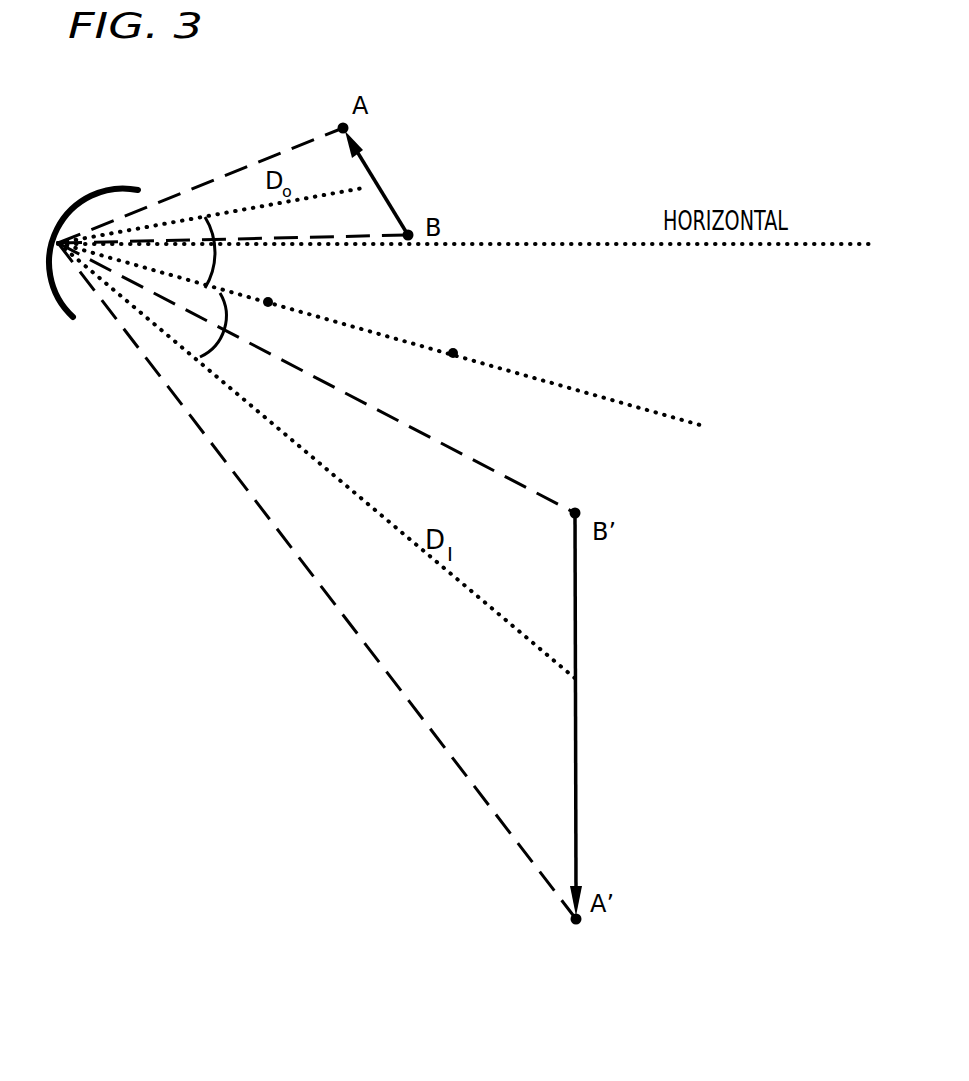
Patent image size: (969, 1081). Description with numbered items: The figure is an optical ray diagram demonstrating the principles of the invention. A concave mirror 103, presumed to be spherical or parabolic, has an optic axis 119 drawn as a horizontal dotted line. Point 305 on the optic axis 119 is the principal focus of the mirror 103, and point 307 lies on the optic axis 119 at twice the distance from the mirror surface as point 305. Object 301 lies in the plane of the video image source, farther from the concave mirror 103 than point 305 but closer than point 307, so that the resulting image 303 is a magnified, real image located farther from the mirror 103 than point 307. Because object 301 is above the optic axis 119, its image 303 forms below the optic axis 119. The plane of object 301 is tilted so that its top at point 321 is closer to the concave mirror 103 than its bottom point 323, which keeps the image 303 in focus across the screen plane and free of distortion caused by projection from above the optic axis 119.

The concave mirror 103 is at (75, 207).
The optic axis 119 is at (622, 405).
The object 301 is at (372, 170).
The image 303 is at (578, 635).
The principal focus point 305 is at (272, 309).
The point at twice the focal distance 307 is at (454, 361).
The top point of object 321 is at (343, 121).
The bottom point of object 323 is at (411, 243).